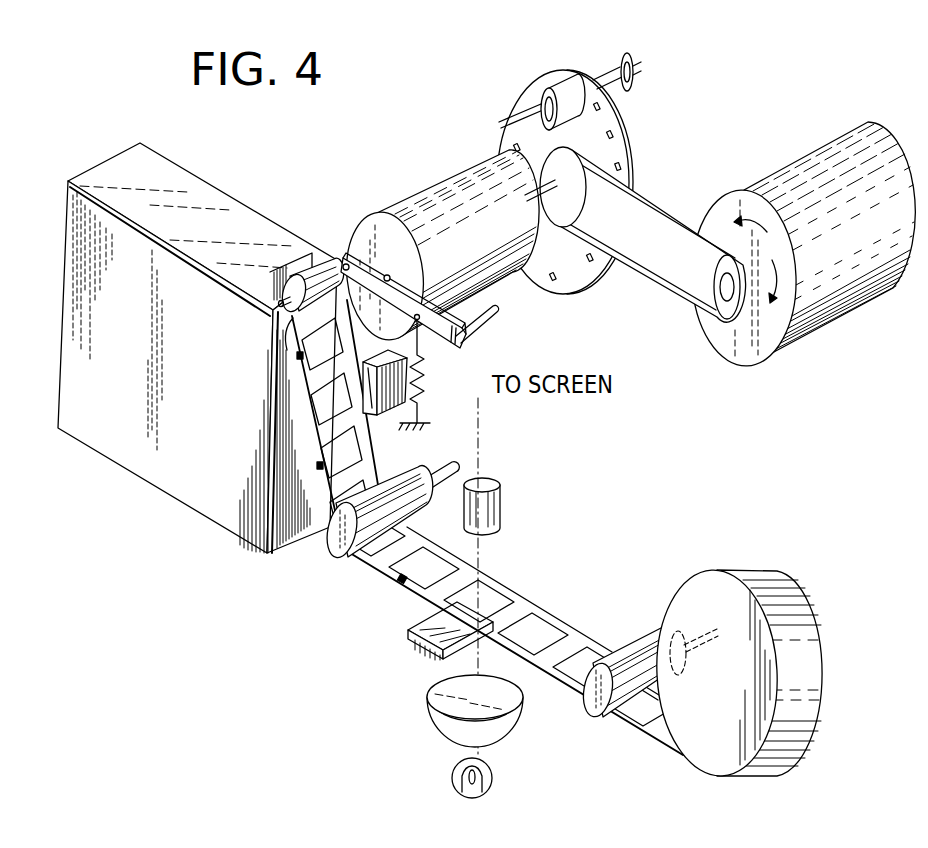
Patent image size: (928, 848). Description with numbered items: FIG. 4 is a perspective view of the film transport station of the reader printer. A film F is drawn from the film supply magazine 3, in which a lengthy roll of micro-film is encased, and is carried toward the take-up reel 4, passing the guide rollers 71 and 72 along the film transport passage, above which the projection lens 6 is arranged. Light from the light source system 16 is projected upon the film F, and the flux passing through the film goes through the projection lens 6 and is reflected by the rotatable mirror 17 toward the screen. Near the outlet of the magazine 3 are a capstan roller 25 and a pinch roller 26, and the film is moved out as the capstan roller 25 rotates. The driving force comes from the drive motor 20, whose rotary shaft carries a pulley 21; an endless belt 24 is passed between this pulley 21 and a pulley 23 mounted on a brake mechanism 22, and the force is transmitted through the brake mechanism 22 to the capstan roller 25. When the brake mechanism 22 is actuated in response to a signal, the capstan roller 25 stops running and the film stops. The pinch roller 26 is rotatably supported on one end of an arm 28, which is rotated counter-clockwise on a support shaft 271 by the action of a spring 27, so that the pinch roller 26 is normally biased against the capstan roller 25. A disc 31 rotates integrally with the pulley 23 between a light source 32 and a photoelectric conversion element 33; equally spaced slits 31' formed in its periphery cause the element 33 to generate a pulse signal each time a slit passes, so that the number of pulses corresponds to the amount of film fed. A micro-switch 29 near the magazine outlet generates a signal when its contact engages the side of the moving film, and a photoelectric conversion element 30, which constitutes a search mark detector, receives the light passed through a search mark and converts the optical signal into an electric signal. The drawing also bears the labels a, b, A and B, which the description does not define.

The film supply magazine 3 is at (253, 210).
The take-up reel 4 is at (734, 583).
The projection lens 6 is at (500, 500).
The light source system 16 is at (492, 770).
The rotatable mirror 17 is at (448, 731).
The drive motor 20 is at (840, 297).
The pulley 21 is at (735, 305).
The brake mechanism 22 is at (491, 286).
The pulley 23 is at (553, 215).
The endless belt 24 is at (641, 273).
The capstan roller 25 is at (288, 330).
The pinch roller 26 is at (329, 264).
The spring 27 is at (425, 374).
The support shaft 271 is at (483, 322).
The arm 28 is at (405, 297).
The micro-switch 29 is at (389, 402).
The photoelectric conversion element 30 is at (417, 643).
The disc 31 is at (593, 182).
The slits 31' is at (603, 192).
The light source 32 is at (612, 73).
The photoelectric conversion element 33 is at (540, 97).
The guide roller 71 is at (336, 544).
The guide roller 72 is at (596, 716).
The film F is at (370, 566).
The film frame a is at (548, 632).
The frame mark b is at (409, 580).
The rotation direction A is at (782, 277).
The rotation direction B is at (750, 213).